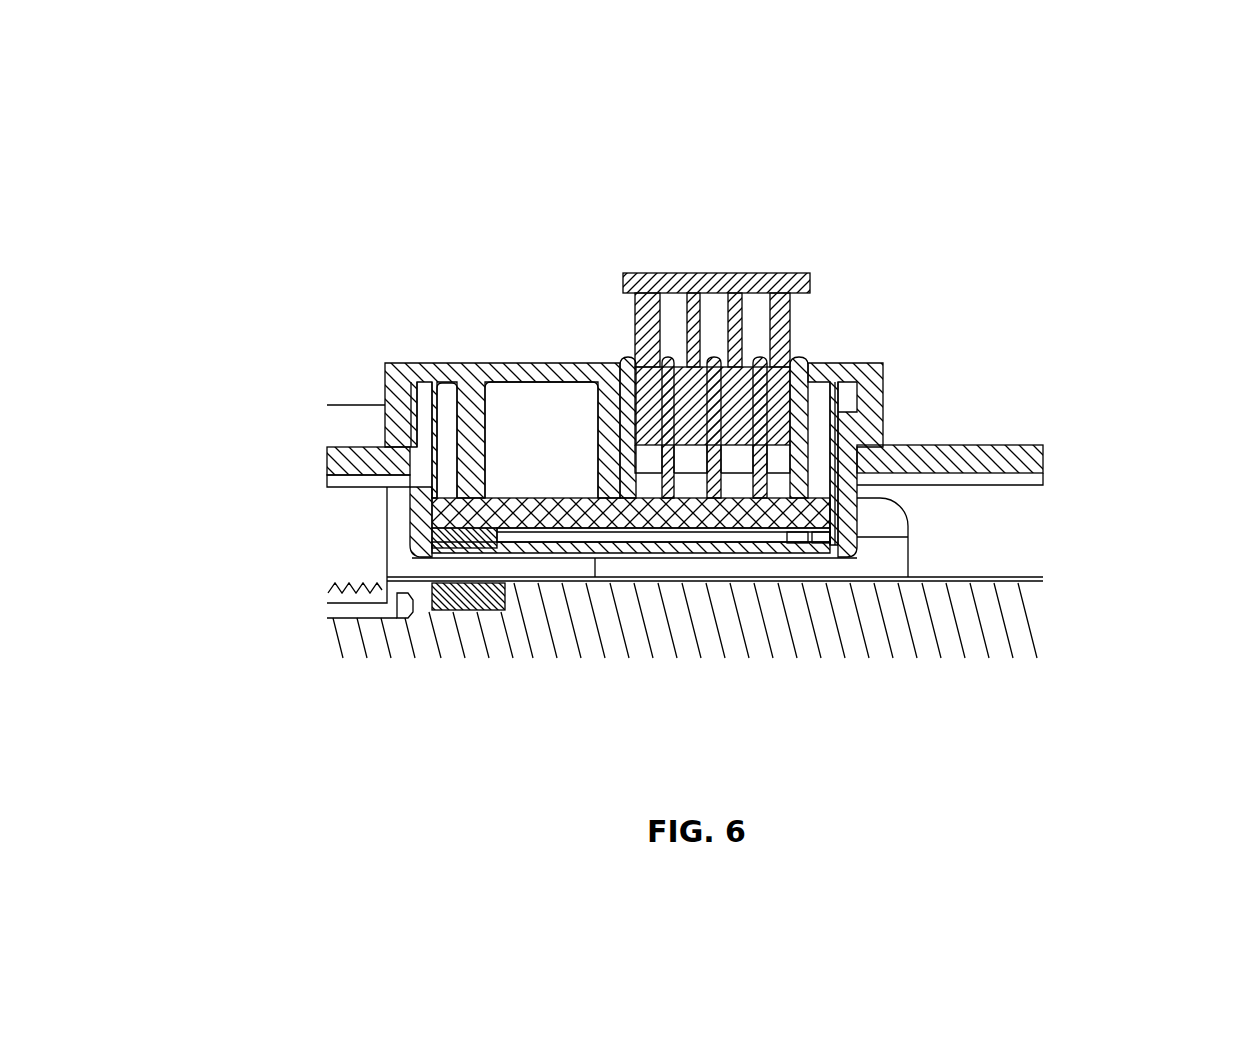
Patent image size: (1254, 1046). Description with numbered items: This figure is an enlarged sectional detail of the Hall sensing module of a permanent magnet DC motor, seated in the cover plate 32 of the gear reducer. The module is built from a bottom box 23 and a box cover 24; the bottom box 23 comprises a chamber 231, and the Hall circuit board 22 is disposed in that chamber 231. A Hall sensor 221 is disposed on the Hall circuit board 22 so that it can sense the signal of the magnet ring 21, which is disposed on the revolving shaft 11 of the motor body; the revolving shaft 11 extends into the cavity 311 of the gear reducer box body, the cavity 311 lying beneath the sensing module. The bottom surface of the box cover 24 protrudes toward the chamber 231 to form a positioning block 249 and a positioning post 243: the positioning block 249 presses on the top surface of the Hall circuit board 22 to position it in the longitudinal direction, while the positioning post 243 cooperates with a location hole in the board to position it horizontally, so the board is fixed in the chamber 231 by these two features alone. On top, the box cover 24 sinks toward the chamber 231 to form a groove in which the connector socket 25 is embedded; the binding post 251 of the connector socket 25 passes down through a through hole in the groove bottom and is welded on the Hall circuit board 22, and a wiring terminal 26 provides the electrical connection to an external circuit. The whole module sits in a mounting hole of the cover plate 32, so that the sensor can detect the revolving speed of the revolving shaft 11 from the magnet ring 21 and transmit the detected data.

The revolving shaft 11 is at (682, 625).
The magnet ring 21 is at (452, 612).
The Hall circuit board 22 is at (400, 482).
The Hall sensor 221 is at (440, 545).
The bottom box 23 is at (840, 467).
The chamber 231 is at (530, 425).
The box cover 24 is at (470, 400).
The positioning post 243 is at (802, 540).
The positioning block 249 is at (473, 440).
The connector socket 25 is at (800, 410).
The binding post 251 is at (652, 393).
The wiring terminal 26 is at (792, 343).
The cavity 311 is at (973, 538).
The cover plate 32 is at (932, 473).